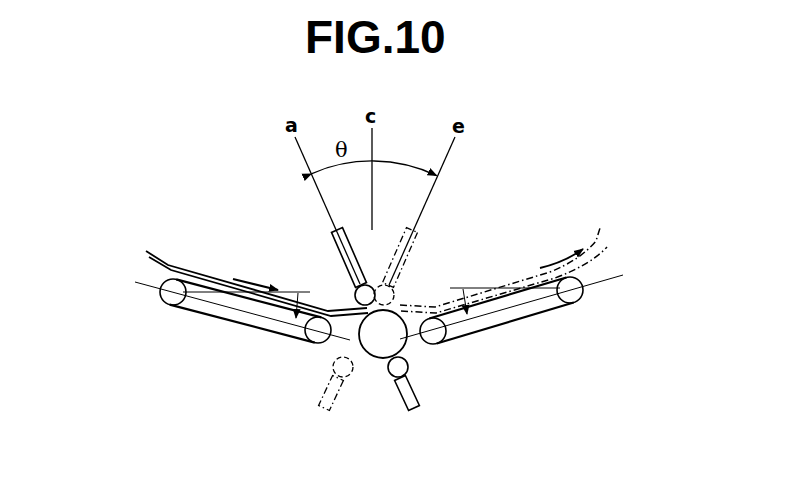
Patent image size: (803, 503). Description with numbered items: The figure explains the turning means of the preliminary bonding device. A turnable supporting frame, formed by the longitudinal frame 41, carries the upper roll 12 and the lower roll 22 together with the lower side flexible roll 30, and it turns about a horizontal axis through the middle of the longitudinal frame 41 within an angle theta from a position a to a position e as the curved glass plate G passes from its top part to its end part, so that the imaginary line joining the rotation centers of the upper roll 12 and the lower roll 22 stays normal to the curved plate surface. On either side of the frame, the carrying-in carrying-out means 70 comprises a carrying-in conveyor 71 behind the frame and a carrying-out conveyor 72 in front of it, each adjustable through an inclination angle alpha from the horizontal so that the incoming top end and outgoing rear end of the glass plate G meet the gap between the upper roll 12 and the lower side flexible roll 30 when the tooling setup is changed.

The upper roll 12 is at (356, 291).
The lower roll 22 is at (395, 378).
The lower side flexible roll 30 is at (380, 350).
The longitudinal frame 41 is at (338, 243).
The carrying-in carrying-out means 70 is at (258, 352).
The carrying-in conveyor 71 is at (233, 313).
The carrying-out conveyor 72 is at (518, 312).